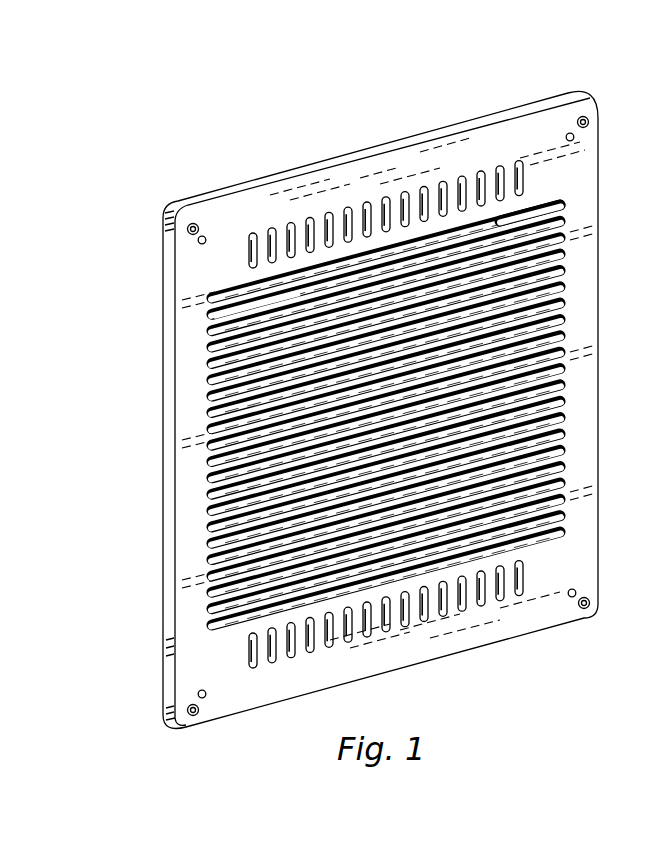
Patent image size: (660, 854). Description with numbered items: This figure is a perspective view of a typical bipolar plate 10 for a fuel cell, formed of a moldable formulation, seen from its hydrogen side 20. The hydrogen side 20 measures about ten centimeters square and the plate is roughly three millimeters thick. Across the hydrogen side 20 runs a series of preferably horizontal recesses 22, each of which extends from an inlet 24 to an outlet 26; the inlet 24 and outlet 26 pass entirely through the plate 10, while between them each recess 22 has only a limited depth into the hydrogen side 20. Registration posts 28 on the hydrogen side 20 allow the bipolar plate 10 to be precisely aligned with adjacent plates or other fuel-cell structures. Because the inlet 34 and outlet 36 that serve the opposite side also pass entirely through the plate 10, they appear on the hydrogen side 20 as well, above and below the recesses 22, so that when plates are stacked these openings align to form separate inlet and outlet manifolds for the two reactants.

The bipolar plate 10 is at (260, 133).
The hydrogen side 20 is at (408, 396).
The recesses 22 is at (246, 288).
The inlet 24 is at (214, 318).
The outlet 26 is at (557, 203).
The registration posts 28 is at (590, 602).
The inlet 34 is at (483, 172).
The outlet 36 is at (290, 662).